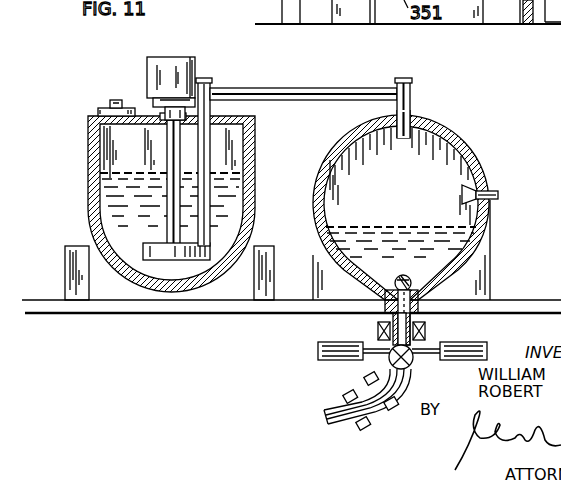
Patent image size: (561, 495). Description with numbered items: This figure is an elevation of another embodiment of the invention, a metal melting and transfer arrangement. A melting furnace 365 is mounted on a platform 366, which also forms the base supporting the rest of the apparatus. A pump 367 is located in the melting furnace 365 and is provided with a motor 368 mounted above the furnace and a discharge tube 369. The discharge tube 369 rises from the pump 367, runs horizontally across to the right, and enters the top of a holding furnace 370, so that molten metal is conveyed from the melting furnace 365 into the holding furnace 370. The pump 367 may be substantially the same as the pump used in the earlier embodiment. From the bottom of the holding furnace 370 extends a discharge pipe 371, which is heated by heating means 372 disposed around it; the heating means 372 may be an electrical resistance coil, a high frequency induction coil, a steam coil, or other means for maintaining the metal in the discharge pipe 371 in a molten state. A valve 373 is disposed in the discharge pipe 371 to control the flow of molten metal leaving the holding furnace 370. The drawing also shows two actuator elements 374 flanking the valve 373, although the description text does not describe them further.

The melting furnace 365 is at (92, 179).
The platform 366 is at (52, 299).
The pump 367 is at (163, 256).
The motor 368 is at (172, 58).
The discharge tube 369 is at (265, 93).
The holding furnace 370 is at (460, 140).
The discharge pipe 371 is at (345, 416).
The heating means 372 is at (372, 425).
The valve 373 is at (390, 358).
The valve actuators 374 is at (327, 347).